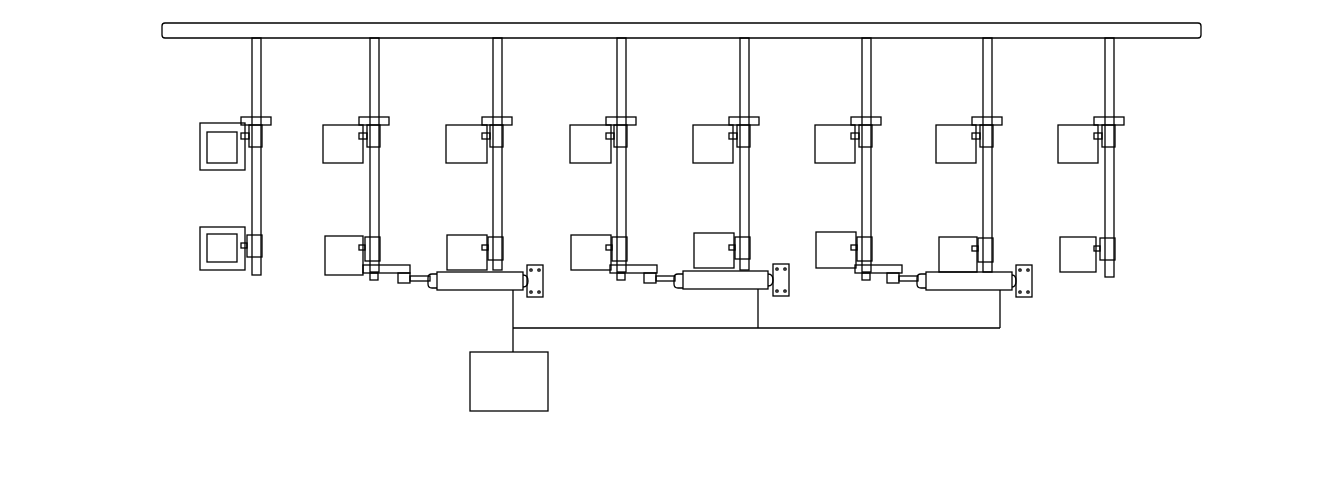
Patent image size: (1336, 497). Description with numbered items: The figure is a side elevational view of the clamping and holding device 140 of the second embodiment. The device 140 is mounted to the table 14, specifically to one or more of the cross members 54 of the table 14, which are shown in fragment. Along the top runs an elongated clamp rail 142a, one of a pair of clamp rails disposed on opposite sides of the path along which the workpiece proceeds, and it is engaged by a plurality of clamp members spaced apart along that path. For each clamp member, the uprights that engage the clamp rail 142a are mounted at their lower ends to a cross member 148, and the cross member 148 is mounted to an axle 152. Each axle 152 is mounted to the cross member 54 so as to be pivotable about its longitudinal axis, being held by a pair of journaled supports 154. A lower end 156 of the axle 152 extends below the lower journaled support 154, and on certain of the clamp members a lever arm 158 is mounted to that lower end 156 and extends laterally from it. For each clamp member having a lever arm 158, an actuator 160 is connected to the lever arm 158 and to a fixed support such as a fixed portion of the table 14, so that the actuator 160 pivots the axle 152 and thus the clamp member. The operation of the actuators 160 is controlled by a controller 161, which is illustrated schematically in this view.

The clamping and holding device 140 is at (1205, 91).
The clamp rail 142a is at (679, 63).
The axle 152 is at (261, 202).
The cross member 148 is at (266, 118).
The journaled support 154 is at (263, 135).
The cross member 54 is at (200, 152).
The table 14 is at (1090, 281).
The lower end 156 is at (382, 264).
The lever arm 158 is at (381, 281).
The actuator 160 is at (465, 290).
The controller 161 is at (470, 388).